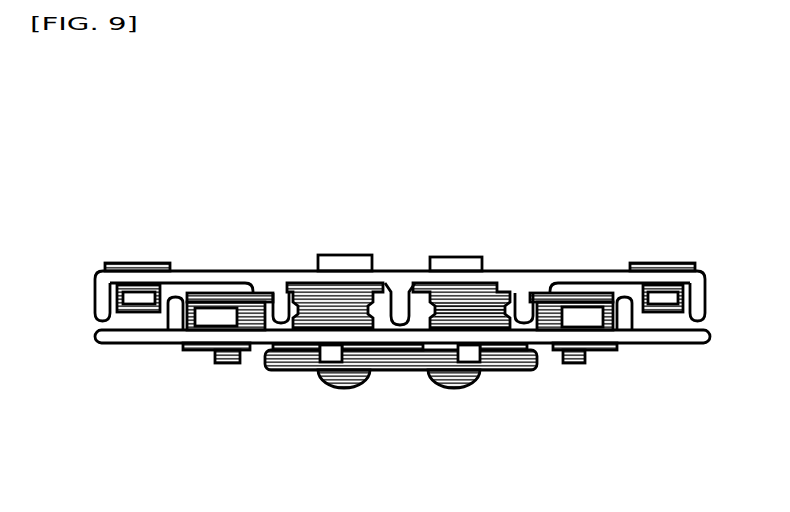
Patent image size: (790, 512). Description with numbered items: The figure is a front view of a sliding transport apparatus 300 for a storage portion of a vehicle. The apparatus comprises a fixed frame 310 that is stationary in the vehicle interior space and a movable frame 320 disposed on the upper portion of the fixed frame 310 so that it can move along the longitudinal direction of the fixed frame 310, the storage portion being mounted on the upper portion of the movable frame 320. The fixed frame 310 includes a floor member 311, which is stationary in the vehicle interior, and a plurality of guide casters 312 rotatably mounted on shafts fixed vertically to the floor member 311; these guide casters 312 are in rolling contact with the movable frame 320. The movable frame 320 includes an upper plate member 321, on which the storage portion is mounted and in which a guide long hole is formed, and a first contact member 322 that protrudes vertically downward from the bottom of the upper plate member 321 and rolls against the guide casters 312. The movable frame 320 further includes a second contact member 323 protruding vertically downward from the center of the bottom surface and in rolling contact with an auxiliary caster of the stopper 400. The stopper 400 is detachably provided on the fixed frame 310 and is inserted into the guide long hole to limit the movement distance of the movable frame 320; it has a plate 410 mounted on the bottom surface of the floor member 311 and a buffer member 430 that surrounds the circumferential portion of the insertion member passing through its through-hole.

The sliding transport apparatus 300 is at (573, 168).
The fixed frame 310 is at (400, 387).
The floor member 311 is at (585, 323).
The guide caster 312 is at (463, 308).
The movable frame 320 is at (443, 225).
The upper plate member 321 is at (570, 280).
The first contact member 322 is at (522, 302).
The second contact member 323 is at (398, 300).
The stopper 400 is at (310, 258).
The plate 410 is at (398, 358).
The buffer member 430 is at (343, 258).